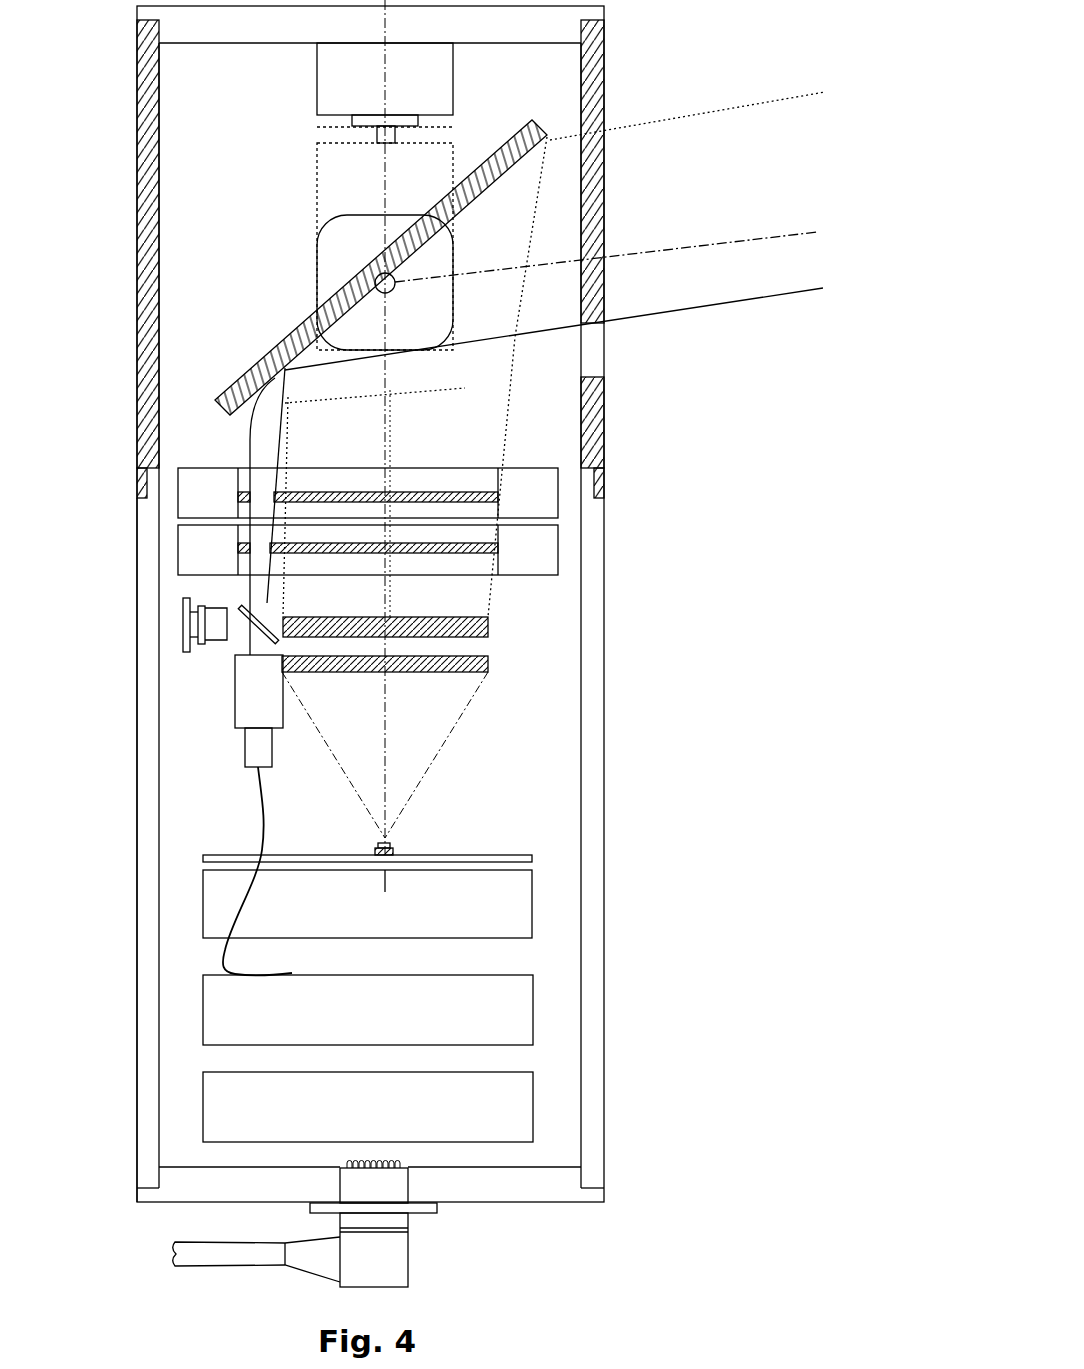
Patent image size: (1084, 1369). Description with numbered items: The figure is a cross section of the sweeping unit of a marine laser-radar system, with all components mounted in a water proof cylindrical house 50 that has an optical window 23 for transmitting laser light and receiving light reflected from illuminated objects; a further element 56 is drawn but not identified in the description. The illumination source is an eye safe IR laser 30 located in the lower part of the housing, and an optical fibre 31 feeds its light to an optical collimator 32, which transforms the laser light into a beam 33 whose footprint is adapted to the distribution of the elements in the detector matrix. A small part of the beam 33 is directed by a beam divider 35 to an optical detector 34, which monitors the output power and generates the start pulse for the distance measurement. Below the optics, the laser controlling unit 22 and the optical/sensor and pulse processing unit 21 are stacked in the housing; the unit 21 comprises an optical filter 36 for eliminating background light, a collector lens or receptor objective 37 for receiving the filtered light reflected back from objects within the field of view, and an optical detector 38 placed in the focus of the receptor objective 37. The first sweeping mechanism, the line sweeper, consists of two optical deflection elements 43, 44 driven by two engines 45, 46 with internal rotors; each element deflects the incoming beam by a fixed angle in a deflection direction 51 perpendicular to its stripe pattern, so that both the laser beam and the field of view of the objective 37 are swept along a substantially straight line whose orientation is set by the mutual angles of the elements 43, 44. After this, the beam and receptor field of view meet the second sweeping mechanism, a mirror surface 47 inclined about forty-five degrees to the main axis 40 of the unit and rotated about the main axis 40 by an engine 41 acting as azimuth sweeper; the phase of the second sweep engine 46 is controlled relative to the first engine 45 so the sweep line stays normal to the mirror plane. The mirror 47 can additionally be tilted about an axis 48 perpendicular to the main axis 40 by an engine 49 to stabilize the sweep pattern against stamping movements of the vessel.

The optical/sensor and pulse processing unit 21 is at (367, 904).
The laser controlling unit 22 is at (368, 1107).
The optical window 23 is at (590, 210).
The IR laser 30 is at (368, 1010).
The fibre-optical feeding 31 is at (258, 830).
The optical collimator 32 is at (252, 703).
The beam 33 is at (236, 591).
The optical detector 34 is at (213, 628).
The beam divider 35 is at (265, 633).
The optical filter 36 is at (488, 617).
The collector lens (receptor objective) 37 is at (488, 660).
The optical detector 38 is at (395, 847).
The main axis 40 is at (387, 93).
The engine (azimuth sweeper) 41 is at (385, 93).
The optical deflection element 43 is at (330, 543).
The optical deflection element 44 is at (415, 493).
The sweep engine 45 is at (368, 550).
The sweep engine 46 is at (368, 493).
The mirror surface 47 is at (445, 210).
The tilt axis 48 is at (370, 278).
The tilt engine 49 is at (412, 292).
The cylindrical house 50 is at (594, 597).
The deflection direction 51 is at (716, 243).
The housing side wall 56 is at (152, 847).